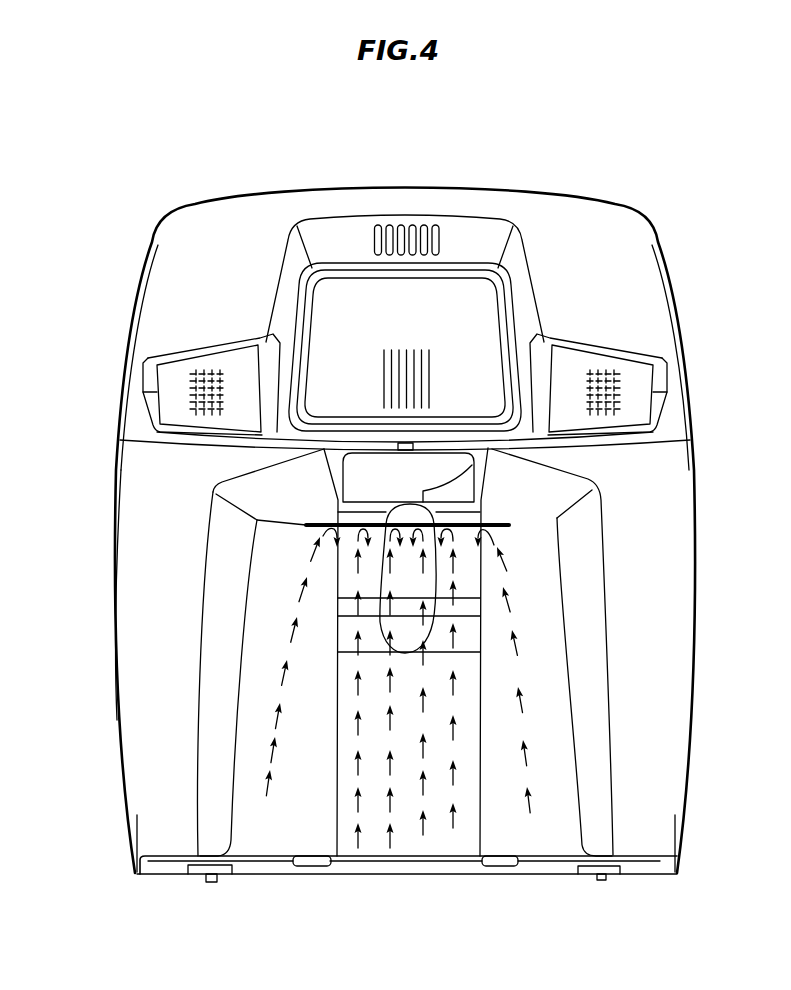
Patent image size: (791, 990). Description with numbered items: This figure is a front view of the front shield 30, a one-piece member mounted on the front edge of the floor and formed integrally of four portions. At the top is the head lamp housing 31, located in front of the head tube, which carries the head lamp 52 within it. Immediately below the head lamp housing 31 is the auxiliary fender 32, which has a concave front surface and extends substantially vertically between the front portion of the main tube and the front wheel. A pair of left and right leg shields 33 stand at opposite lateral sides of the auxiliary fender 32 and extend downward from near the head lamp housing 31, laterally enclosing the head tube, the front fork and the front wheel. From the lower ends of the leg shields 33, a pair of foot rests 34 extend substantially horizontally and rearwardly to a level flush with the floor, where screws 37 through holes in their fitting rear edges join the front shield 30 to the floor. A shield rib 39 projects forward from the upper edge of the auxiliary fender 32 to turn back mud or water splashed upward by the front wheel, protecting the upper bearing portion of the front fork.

The front shield 30 is at (135, 235).
The head lamp housing 31 is at (300, 303).
The head lamp 52 is at (455, 295).
The leg shields 33 is at (127, 525).
The shield rib 39 is at (495, 518).
The foot rests 34 is at (150, 842).
The screws 37 is at (210, 887).
The auxiliary fender 32 is at (276, 827).